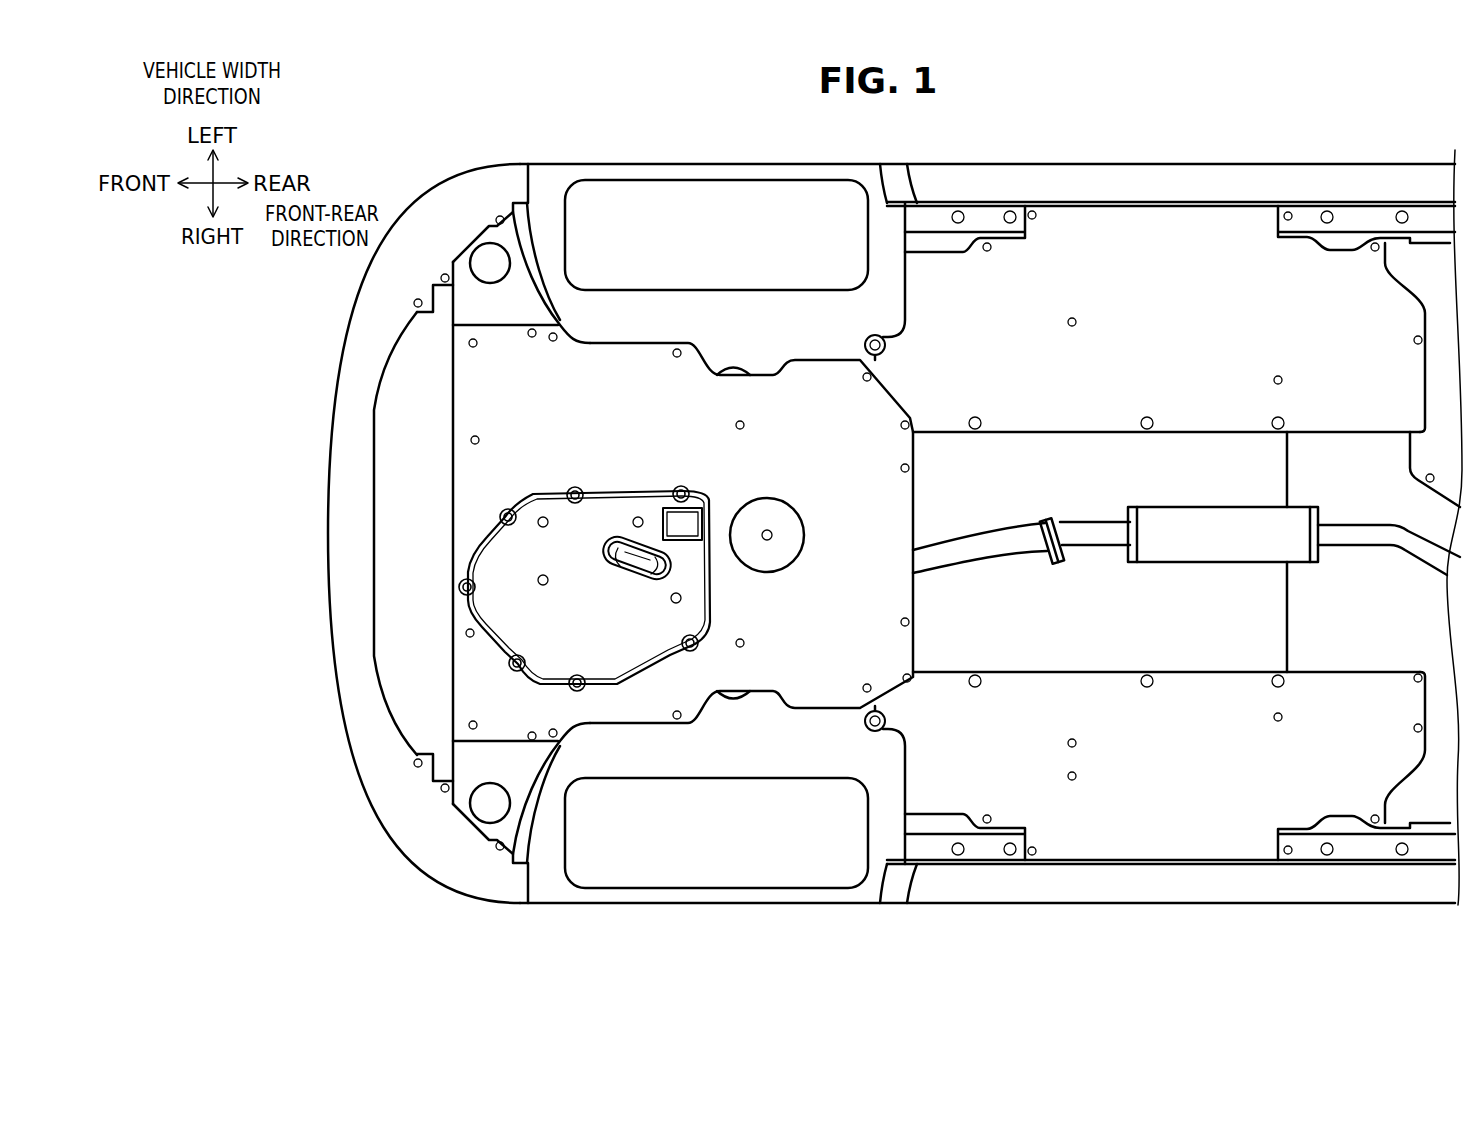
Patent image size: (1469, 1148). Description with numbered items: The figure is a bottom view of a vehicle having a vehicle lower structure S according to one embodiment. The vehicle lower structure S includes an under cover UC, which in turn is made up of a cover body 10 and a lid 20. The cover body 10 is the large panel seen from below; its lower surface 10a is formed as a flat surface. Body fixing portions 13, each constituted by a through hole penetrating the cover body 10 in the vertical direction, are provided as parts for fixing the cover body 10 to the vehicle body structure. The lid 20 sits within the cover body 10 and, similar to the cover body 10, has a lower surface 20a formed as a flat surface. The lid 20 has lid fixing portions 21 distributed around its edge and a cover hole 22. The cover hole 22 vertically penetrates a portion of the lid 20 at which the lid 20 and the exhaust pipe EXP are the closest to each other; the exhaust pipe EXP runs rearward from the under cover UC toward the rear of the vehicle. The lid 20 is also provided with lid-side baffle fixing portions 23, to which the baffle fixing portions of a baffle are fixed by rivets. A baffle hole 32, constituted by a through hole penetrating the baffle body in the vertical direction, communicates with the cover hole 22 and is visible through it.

The cover body 10 is at (589, 533).
The lower surface of the cover body 10a is at (582, 400).
The body fixing portions 13 is at (864, 374).
The lid 20 is at (487, 580).
The lower surface of the lid 20a is at (630, 620).
The lid fixing portions 21 is at (570, 688).
The cover hole 22 is at (605, 550).
The lid-side baffle fixing portions 23 is at (543, 585).
The baffle hole 32 is at (672, 560).
The under cover UC is at (264, 421).
The exhaust pipe EXP is at (1003, 543).
The vehicle lower structure S is at (1218, 146).